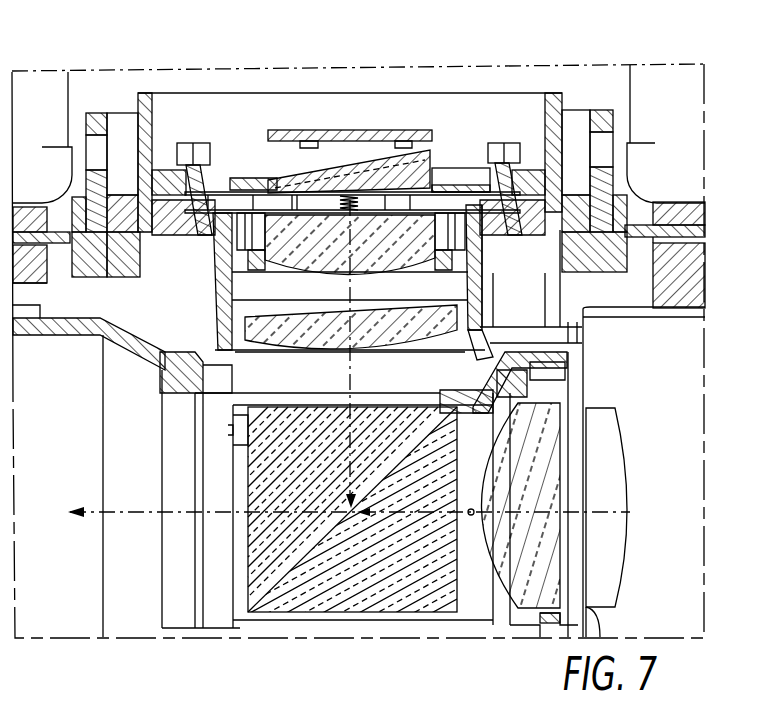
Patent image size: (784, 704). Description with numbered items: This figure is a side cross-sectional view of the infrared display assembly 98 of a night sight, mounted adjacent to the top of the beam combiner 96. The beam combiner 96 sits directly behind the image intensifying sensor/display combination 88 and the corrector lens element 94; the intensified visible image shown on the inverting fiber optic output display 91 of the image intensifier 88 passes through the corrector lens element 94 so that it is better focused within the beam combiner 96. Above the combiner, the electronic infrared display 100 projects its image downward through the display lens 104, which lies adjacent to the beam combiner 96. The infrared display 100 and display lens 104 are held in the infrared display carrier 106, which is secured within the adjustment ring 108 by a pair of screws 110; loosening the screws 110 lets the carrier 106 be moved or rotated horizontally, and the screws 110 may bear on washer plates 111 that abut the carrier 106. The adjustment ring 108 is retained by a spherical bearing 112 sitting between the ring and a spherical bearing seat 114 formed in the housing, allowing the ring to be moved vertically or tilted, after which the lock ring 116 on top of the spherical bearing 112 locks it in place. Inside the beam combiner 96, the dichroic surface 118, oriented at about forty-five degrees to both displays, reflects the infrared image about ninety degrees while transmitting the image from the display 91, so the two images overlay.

The image intensifying sensor/display combination 88 is at (690, 470).
The inverting fiber optic output display 91 is at (630, 532).
The corrector lens element 94 is at (495, 542).
The beam combiner 96 is at (437, 612).
The infrared display assembly 98 is at (268, 60).
The electronic infrared display 100 is at (417, 162).
The display lens 104 is at (333, 288).
The infrared display carrier 106 is at (246, 180).
The adjustment ring 108 is at (560, 108).
The screws 110 is at (188, 146).
The washer plates 111 is at (458, 176).
The spherical bearing 112 is at (130, 270).
The spherical bearing seat 114 is at (93, 262).
The lock ring 116 is at (130, 200).
The dichroic surface 118 is at (262, 562).